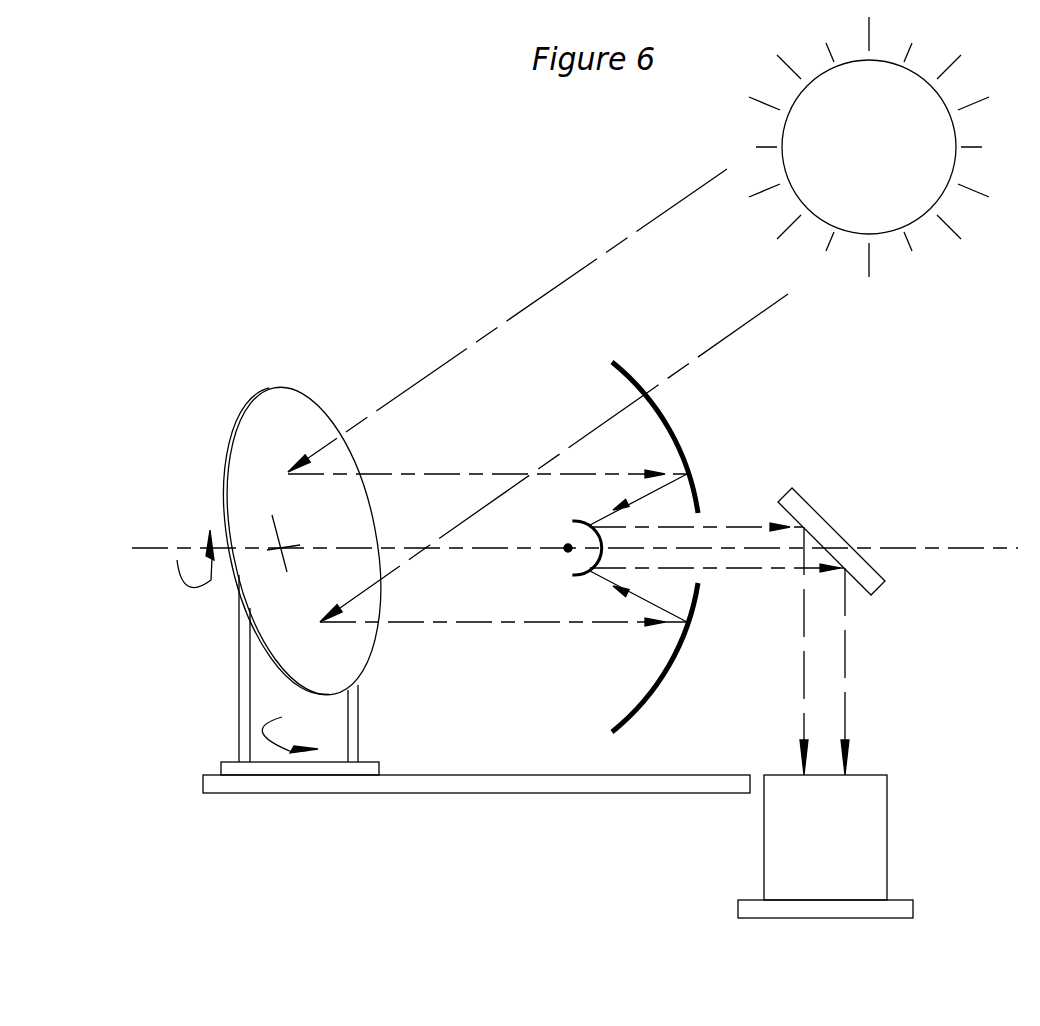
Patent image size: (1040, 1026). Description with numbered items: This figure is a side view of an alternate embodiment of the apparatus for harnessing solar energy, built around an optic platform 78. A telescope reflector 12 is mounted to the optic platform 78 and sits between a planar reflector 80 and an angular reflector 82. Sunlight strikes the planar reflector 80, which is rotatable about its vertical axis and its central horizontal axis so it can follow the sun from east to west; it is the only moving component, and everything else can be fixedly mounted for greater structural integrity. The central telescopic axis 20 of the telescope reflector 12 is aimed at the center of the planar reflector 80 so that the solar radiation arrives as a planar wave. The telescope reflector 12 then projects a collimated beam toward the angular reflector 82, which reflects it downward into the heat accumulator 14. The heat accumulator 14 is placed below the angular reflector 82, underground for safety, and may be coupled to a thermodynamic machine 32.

The telescope reflector 12 is at (572, 325).
The heat accumulator 14 is at (888, 838).
The central telescopic axis 20 is at (152, 548).
The thermodynamic machine 32 is at (917, 905).
The optic platform 78 is at (477, 794).
The planar reflector 80 is at (287, 415).
The angular reflector 82 is at (840, 530).